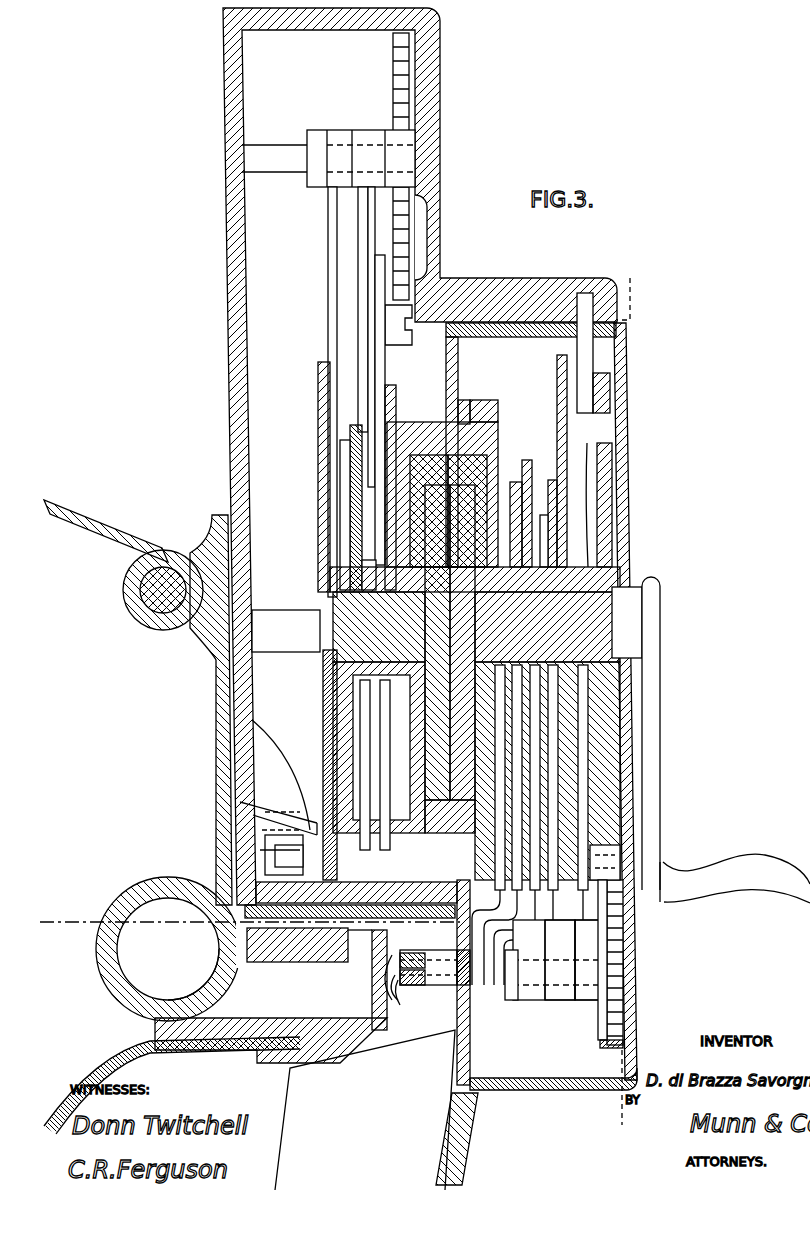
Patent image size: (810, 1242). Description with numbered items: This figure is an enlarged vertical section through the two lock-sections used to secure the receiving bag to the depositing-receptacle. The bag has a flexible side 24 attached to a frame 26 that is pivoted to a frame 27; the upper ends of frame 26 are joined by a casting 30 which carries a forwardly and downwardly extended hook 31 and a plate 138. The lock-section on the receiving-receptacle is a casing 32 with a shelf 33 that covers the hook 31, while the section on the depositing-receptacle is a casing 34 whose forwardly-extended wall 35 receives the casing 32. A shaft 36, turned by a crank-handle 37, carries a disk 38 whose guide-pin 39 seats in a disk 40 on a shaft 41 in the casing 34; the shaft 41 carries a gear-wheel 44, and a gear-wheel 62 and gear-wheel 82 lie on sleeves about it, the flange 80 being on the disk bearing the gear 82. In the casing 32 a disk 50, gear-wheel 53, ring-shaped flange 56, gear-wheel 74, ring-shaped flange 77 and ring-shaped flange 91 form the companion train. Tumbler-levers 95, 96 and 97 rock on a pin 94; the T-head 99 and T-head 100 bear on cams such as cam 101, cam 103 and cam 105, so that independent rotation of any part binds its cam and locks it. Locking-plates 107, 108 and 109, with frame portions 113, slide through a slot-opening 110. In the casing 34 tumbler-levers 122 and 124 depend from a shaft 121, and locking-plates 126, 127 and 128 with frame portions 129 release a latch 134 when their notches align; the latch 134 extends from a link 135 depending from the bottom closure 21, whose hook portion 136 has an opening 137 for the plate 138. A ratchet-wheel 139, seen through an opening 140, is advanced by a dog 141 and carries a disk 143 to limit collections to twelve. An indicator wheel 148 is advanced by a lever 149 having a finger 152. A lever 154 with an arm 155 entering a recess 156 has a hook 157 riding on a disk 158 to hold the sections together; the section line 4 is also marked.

The section line 4 is at (629, 707).
The bottom closure 21 is at (90, 515).
The flexible side 24 is at (118, 1065).
The frame 26 is at (305, 1104).
The frame 27 is at (480, 1118).
The casting 30 is at (372, 976).
The hook 31 is at (438, 948).
The casing 32 is at (637, 982).
The shelf 33 is at (351, 906).
The casing 34 is at (432, 105).
The forwardly-extended wall 35 is at (572, 275).
The shaft 36 is at (635, 620).
The crank-handle 37 is at (660, 824).
The disk 38 is at (476, 627).
The guide-pin 39 is at (476, 758).
The disk 40 is at (445, 622).
The shaft 41 is at (286, 631).
The gear-wheel 44 is at (318, 405).
The disk 50 is at (429, 511).
The gear-wheel 53 is at (557, 380).
The ring-shaped flange 56 is at (467, 511).
The gear-wheel 62 is at (354, 425).
The gear-wheel 74 is at (525, 460).
The ring-shaped flange 77 is at (484, 411).
The ring-shaped flange 80 is at (442, 494).
The gear-wheel 82 is at (401, 487).
The ring-shaped flange 91 is at (450, 642).
The pin 94 is at (512, 1000).
The tumbler-lever 95 is at (556, 960).
The tumbler-lever 96 is at (563, 960).
The tumbler-lever 97 is at (587, 960).
The T-head 99 is at (539, 538).
The T-head 100 is at (592, 493).
The cam 101 is at (508, 511).
The cam 103 is at (552, 480).
The cam 105 is at (612, 470).
The locking-plate 107 is at (414, 1007).
The locking-plate 108 is at (415, 997).
The locking-plate 109 is at (414, 990).
The slot-opening 110 is at (470, 985).
The frame portion 113 is at (513, 865).
The shaft 121 is at (283, 150).
The tumbler-lever 122 is at (328, 282).
The tumbler-lever 124 is at (368, 295).
The locking-plate 126 is at (265, 812).
The locking-plate 127 is at (262, 830).
The locking-plate 128 is at (260, 850).
The frame portion 129 is at (318, 722).
The latch 134 is at (278, 805).
The link 135 is at (218, 740).
The hook portion 136 is at (108, 916).
The outer opening 137 is at (228, 966).
The plate 138 is at (309, 956).
The ratchet-wheel 139 is at (626, 1035).
The opening 140 is at (630, 930).
The spring-pressed dog 141 is at (622, 898).
The disk 143 is at (607, 1018).
The ratchet-toothed wheel 148 is at (392, 72).
The lever 149 is at (380, 380).
The finger 152 is at (346, 452).
The lever 154 is at (612, 392).
The arm 155 is at (392, 305).
The recess 156 is at (598, 293).
The hook portion 157 is at (368, 542).
The disk 158 is at (628, 530).